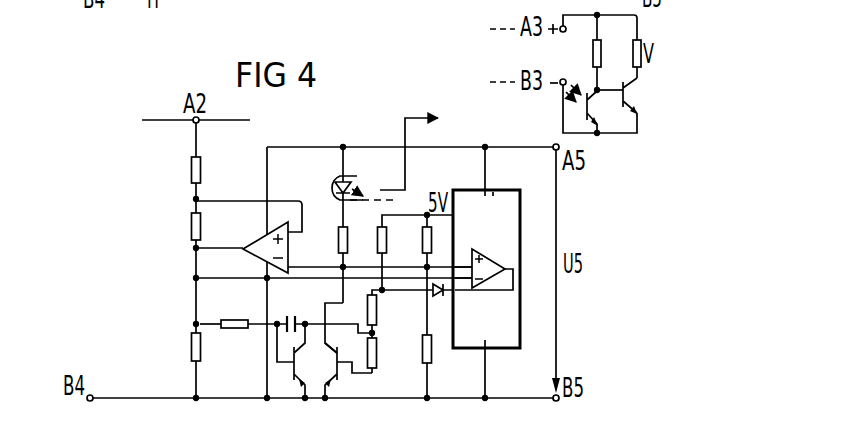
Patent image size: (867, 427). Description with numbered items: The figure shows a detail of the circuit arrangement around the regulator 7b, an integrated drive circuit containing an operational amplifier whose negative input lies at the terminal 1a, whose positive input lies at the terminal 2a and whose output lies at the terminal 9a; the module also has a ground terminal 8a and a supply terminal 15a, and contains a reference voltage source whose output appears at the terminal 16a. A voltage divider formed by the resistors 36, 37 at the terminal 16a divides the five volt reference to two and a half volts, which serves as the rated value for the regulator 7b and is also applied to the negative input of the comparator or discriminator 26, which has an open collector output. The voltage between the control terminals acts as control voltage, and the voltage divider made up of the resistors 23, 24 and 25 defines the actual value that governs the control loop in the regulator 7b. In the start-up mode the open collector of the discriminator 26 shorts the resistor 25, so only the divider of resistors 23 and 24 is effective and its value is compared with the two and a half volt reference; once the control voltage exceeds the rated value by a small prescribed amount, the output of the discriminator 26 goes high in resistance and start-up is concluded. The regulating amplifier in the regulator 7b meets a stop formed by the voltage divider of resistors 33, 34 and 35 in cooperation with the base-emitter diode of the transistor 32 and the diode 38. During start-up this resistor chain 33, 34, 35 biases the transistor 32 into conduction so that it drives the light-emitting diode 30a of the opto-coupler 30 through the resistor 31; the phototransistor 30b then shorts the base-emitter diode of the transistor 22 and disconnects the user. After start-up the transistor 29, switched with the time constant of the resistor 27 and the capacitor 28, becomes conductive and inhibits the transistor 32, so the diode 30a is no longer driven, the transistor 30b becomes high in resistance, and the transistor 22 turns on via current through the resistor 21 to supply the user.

The terminal 1a is at (462, 263).
The terminal 2a is at (464, 284).
The regulator 7b is at (503, 191).
The ground terminal 8a is at (482, 348).
The terminal 9a is at (459, 296).
The supply terminal 15a is at (505, 206).
The terminal 16a is at (488, 197).
The resistor 21 is at (586, 54).
The transistor 22 is at (641, 96).
The voltage divider resistor 23 is at (164, 164).
The voltage divider resistor 24 is at (164, 229).
The voltage divider resistor 25 is at (164, 349).
The comparator or discriminator 26 is at (261, 234).
The resistor 27 is at (232, 296).
The capacitor 28 is at (299, 308).
The transistor 29 is at (288, 361).
The opto-coupler 30 is at (393, 198).
The light-emitting diode 30a is at (392, 175).
The transistor 30b is at (595, 109).
The resistor 31 is at (332, 243).
The transistor 32 is at (336, 359).
The voltage divider resistor 33 is at (371, 243).
The voltage divider resistor 34 is at (384, 311).
The voltage divider resistor 35 is at (383, 355).
The voltage divider resistor 36 is at (414, 243).
The voltage divider resistor 37 is at (417, 349).
The diode 38 is at (438, 305).